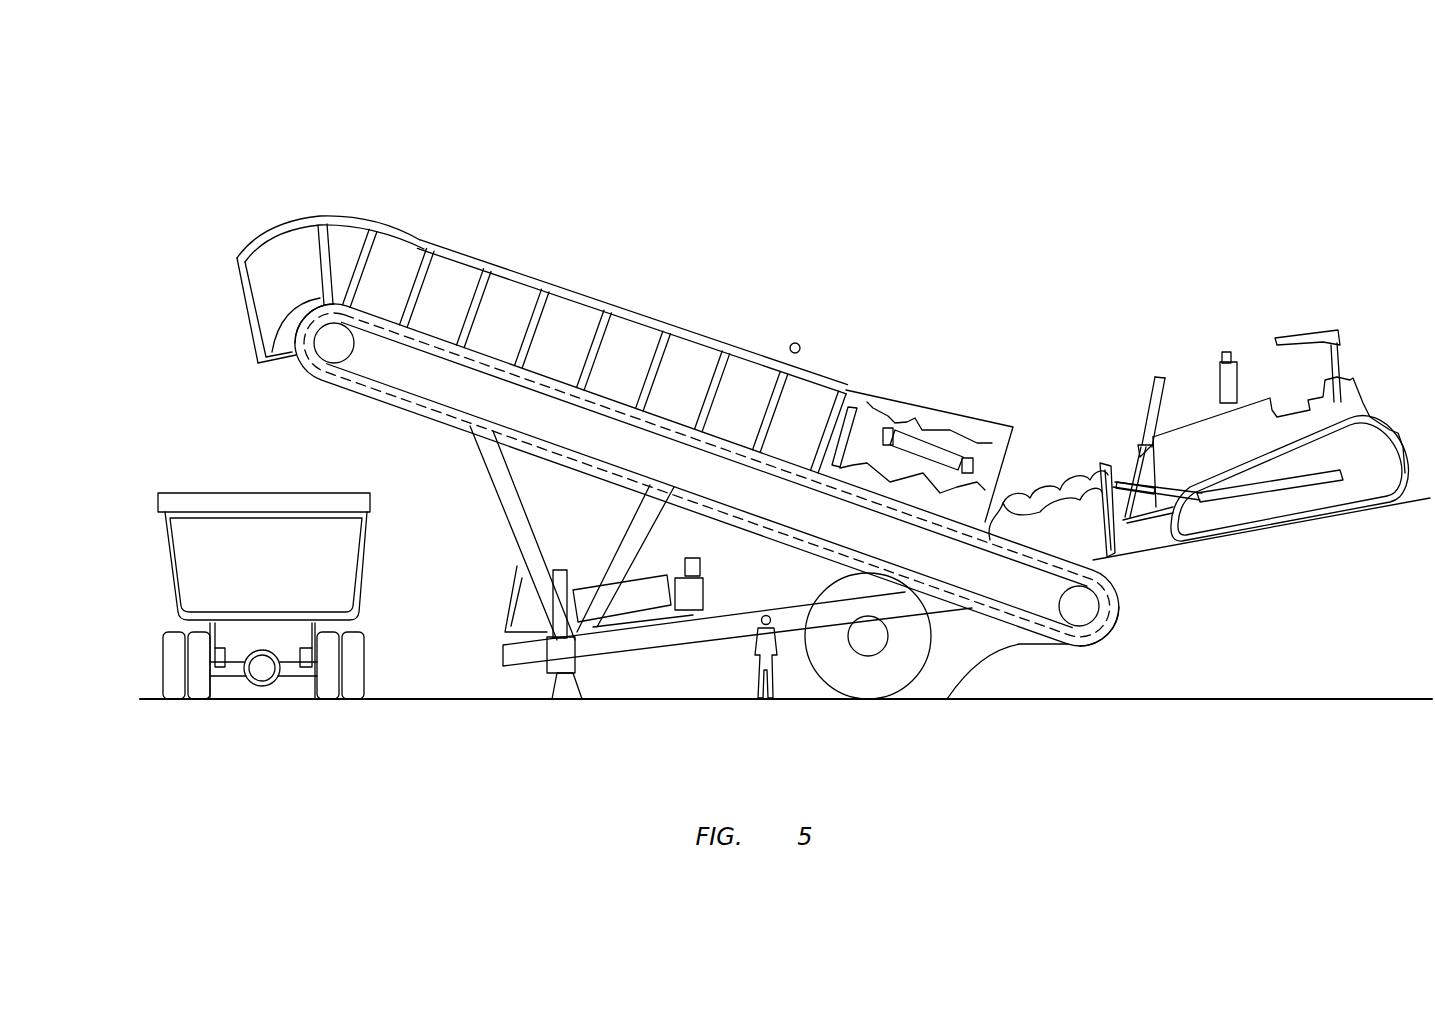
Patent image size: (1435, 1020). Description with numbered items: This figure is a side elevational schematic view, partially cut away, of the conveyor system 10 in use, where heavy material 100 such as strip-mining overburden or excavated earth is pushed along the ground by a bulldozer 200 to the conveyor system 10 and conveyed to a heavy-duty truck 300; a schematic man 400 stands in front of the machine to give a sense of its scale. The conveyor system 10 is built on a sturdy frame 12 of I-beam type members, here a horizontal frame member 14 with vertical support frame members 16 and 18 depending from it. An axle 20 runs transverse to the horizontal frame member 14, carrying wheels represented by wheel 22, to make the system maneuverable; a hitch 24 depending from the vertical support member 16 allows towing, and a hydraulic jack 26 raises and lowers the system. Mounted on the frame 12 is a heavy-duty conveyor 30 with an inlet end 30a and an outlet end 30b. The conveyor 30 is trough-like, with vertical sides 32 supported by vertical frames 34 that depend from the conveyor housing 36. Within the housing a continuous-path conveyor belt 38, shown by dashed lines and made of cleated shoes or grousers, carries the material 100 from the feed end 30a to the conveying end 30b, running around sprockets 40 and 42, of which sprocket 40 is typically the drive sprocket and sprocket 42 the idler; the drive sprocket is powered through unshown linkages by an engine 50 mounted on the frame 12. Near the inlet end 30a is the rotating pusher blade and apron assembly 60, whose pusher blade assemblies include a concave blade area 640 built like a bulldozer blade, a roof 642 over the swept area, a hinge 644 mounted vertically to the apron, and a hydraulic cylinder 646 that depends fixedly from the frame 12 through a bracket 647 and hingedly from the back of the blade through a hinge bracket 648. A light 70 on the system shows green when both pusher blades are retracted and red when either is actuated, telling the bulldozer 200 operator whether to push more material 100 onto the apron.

The conveyor system 10 is at (248, 167).
The frame 12 is at (480, 657).
The horizontal frame member 14 is at (636, 640).
The vertical support frame member 16 is at (495, 487).
The vertical support frame member 18 is at (640, 525).
The axle 20 is at (850, 650).
The wheel 22 is at (893, 683).
The hitch 24 is at (513, 596).
The hydraulic jack 26 is at (553, 670).
The conveyor 30 is at (727, 397).
The inlet end 30a is at (1122, 606).
The outlet end 30b is at (306, 372).
The vertical sides 32 is at (543, 344).
The vertical frames 34 is at (572, 312).
The conveyor housing 36 is at (390, 404).
The conveyor belt 38 is at (450, 422).
The drive sprocket 40 is at (332, 347).
The idler sprocket 42 is at (1072, 613).
The engine 50 is at (704, 580).
The rotating pusher blade and apron assembly 60 is at (944, 386).
The light 70 is at (795, 343).
The material 100 is at (1048, 497).
The bulldozer 200 is at (1170, 465).
The heavy-duty truck 300 is at (243, 580).
The schematic man 400 is at (748, 685).
The blade area 640 is at (1005, 492).
The roof 642 is at (990, 422).
The hinge 644 is at (868, 398).
The hydraulic cylinder 646 is at (953, 391).
The bracket 647 is at (905, 400).
The hinge bracket 648 is at (977, 462).